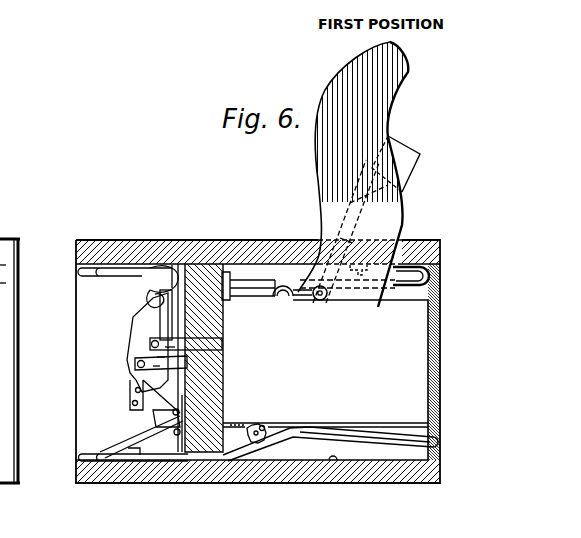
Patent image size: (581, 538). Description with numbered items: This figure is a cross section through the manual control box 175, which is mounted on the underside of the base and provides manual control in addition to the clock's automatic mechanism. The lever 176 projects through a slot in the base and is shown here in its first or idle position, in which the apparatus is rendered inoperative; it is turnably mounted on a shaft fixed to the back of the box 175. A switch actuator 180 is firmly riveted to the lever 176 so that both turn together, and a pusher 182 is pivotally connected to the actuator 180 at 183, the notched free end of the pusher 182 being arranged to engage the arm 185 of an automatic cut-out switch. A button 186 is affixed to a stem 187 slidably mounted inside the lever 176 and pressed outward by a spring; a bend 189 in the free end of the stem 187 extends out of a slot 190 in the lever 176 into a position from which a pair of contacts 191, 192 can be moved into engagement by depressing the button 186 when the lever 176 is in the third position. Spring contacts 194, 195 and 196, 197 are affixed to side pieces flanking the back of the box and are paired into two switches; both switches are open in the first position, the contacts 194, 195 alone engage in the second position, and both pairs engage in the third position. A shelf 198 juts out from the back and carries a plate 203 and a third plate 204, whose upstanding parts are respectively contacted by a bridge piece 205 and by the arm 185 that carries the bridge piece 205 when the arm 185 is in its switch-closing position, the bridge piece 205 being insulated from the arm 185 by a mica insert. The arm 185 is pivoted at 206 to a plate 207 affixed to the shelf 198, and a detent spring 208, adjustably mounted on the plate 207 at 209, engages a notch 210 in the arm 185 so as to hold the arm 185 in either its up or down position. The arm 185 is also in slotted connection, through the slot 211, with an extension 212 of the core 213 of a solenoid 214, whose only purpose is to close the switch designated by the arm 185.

The control box 175 is at (72, 238).
The lever 176 is at (404, 72).
The switch actuator 180 is at (265, 443).
The pusher 182 is at (92, 461).
The pivot connection 183 is at (250, 443).
The arm 185 is at (122, 415).
The button 186 is at (398, 148).
The stem 187 is at (388, 212).
The bend 189 is at (315, 299).
The slot 190 is at (303, 288).
The contact 191 is at (238, 278).
The contact 192 is at (252, 282).
The spring contact 194 is at (360, 435).
The spring contact 195 is at (135, 453).
The spring contact 196 is at (410, 283).
The spring contact 197 is at (113, 263).
The shelf 198 is at (210, 403).
The plate 203 is at (150, 282).
The plate 204 is at (128, 418).
The bridge piece 205 is at (127, 397).
The pivot 206 is at (165, 347).
The plate 207 is at (0, 283).
The detent spring 208 is at (0, 265).
The adjustable mounting 209 is at (167, 262).
The notch 210 is at (157, 302).
The slot 211 is at (157, 357).
The extension 212 is at (153, 366).
The core 213 is at (0, 372).
The solenoid 214 is at (387, 417).